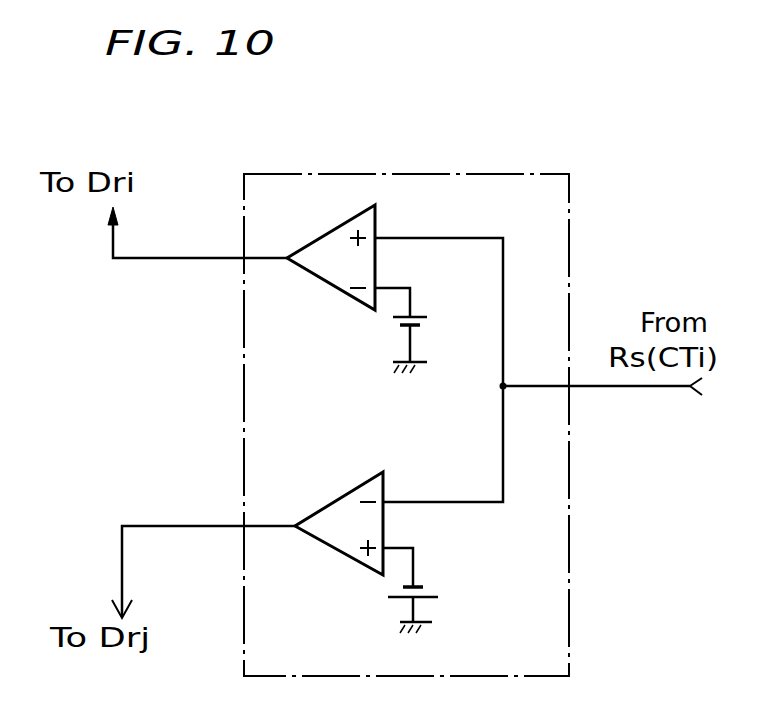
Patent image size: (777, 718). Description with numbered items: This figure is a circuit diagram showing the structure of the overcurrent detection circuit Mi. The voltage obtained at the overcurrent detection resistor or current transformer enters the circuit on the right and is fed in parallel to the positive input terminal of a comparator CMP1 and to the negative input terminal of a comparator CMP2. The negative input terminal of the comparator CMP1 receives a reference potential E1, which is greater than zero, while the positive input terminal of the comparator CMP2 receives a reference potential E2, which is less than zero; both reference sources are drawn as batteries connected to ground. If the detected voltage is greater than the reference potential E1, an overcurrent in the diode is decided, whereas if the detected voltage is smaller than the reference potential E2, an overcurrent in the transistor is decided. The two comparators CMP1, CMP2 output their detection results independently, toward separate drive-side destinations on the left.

The overcurrent detection circuit Mi is at (244, 368).
The comparator CMP1 is at (323, 282).
The comparator CMP2 is at (322, 543).
The reference potential E1 is at (424, 339).
The reference potential E2 is at (438, 605).